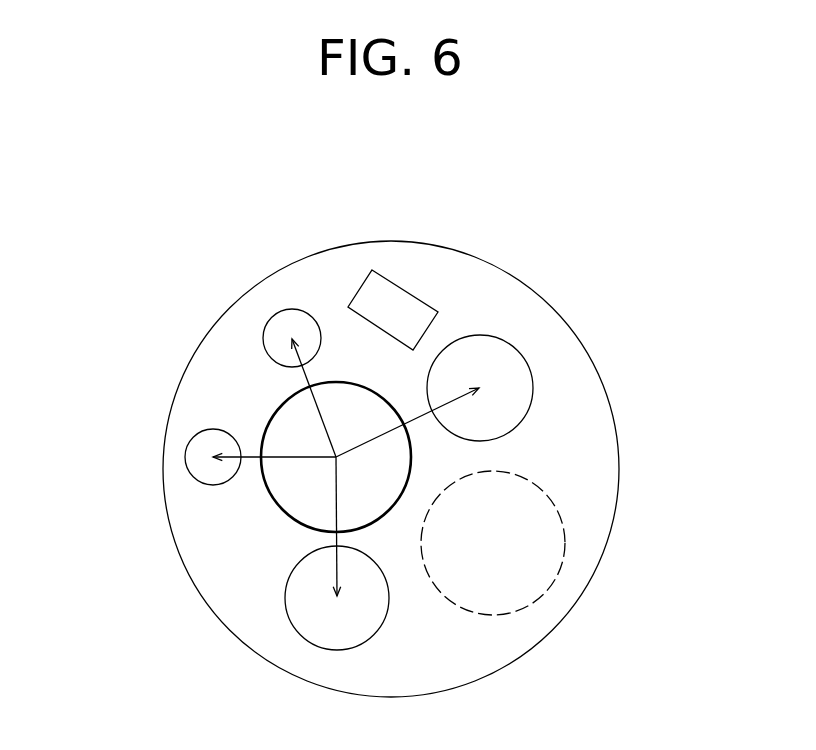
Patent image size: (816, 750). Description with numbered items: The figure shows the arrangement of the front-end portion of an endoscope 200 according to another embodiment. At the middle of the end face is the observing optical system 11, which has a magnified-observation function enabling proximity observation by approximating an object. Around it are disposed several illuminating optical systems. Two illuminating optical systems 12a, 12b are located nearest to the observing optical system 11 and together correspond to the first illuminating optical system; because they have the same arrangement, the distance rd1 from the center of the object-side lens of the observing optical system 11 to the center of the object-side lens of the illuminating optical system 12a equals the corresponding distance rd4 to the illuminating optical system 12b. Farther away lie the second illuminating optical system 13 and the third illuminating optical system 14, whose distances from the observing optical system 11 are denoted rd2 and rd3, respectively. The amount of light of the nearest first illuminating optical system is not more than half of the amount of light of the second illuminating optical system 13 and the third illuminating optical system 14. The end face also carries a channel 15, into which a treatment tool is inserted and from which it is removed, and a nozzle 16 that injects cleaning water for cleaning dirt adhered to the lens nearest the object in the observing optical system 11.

The endoscope 200 is at (562, 230).
The observing optical system 11 is at (268, 492).
The illuminating optical system 12a is at (185, 455).
The illuminating optical system 12b is at (288, 310).
The second illuminating optical system 13 is at (294, 629).
The third illuminating optical system 14 is at (515, 343).
The channel 15 is at (565, 540).
The nozzle 16 is at (402, 285).
The distance between observing optical system and first illuminating optical system rd1 is at (264, 440).
The distance between observing optical system and second illuminating optical system rd2 is at (335, 505).
The distance between observing optical system and third illuminating optical system rd3 is at (450, 404).
The distance between observing optical system and illuminating optical system 12b rd4 is at (295, 362).